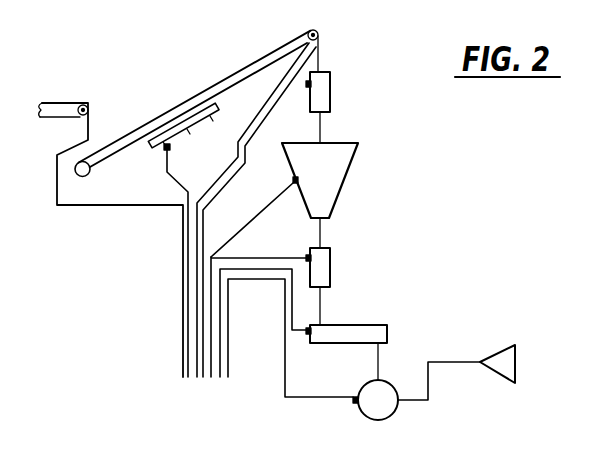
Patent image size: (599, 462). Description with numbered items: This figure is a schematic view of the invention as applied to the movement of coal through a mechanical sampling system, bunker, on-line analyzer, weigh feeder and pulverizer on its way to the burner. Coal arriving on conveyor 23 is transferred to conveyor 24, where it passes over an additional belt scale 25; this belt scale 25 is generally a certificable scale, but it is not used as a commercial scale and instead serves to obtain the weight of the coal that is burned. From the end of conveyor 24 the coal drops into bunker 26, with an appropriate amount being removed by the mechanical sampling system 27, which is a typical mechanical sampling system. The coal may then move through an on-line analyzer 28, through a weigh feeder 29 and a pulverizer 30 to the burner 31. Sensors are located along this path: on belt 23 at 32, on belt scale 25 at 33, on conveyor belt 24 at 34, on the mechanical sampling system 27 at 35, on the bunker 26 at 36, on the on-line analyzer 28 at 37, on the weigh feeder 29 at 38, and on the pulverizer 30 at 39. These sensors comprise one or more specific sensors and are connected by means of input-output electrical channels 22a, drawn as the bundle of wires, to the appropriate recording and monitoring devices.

The input-output electrical channels 22a is at (177, 339).
The conveyor 23 is at (60, 102).
The conveyor 24 is at (186, 97).
The belt scale 25 is at (199, 121).
The bunker 26 is at (345, 182).
The mechanical sampling system 27 is at (331, 86).
The on-line analyzer 28 is at (331, 265).
The weigh feeder 29 is at (360, 324).
The pulverizer 30 is at (393, 415).
The burner 31 is at (497, 349).
The sensor 32 is at (80, 114).
The sensor 33 is at (169, 149).
The sensor 34 is at (318, 29).
The sensor 35 is at (308, 88).
The sensor 36 is at (294, 185).
The sensor 37 is at (306, 256).
The sensor 38 is at (308, 335).
The sensor 39 is at (353, 404).